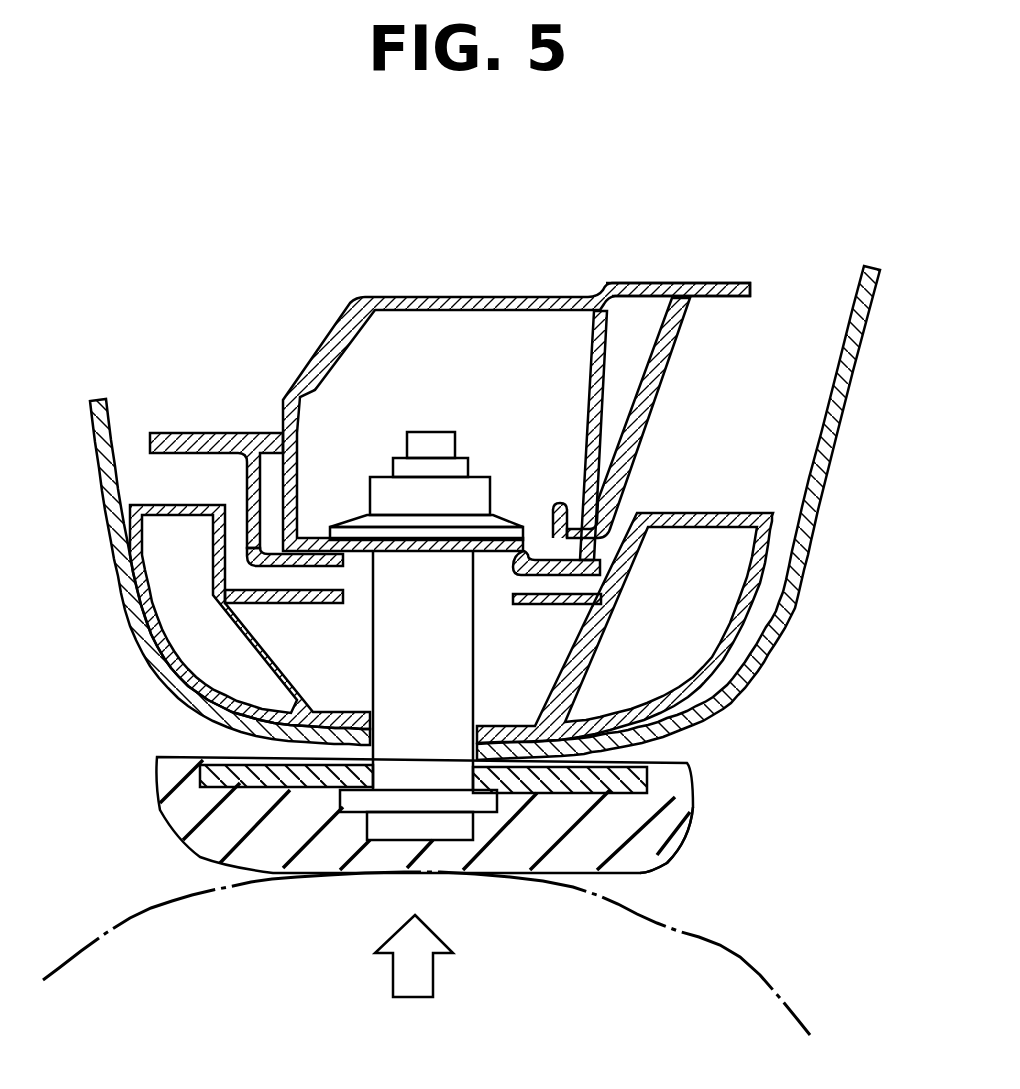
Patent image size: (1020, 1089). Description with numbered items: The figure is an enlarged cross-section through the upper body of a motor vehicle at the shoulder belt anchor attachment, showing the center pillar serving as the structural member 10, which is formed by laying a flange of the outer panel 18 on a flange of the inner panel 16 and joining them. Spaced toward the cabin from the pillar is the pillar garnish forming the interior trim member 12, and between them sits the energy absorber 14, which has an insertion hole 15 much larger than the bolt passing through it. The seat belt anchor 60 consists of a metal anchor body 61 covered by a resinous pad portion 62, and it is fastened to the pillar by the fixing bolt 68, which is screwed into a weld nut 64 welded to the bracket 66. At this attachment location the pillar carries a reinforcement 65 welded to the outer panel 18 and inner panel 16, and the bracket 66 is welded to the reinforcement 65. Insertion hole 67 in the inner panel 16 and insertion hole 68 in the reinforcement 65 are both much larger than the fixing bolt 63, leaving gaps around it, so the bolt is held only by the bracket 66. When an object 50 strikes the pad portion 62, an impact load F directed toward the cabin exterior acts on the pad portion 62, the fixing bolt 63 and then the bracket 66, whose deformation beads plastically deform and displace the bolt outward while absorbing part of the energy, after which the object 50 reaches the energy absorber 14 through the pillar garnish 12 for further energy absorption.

The structural member 10 is at (461, 290).
The interior trim member 12 is at (862, 360).
The energy absorber 14 is at (726, 506).
The insertion hole 15 is at (506, 604).
The inner panel 16 is at (267, 433).
The outer panel 18 is at (688, 281).
The object 50 is at (753, 970).
The seat belt anchor 60 is at (503, 800).
The anchor body 61 is at (647, 767).
The pad portion 62 is at (690, 827).
The fixing bolt 63 is at (370, 653).
The weld nut 64 is at (495, 488).
The reinforcement 65 is at (597, 393).
The bracket 66 is at (596, 492).
The insertion hole 67 is at (352, 568).
The insertion hole 68 is at (513, 556).
The impact load F is at (415, 967).